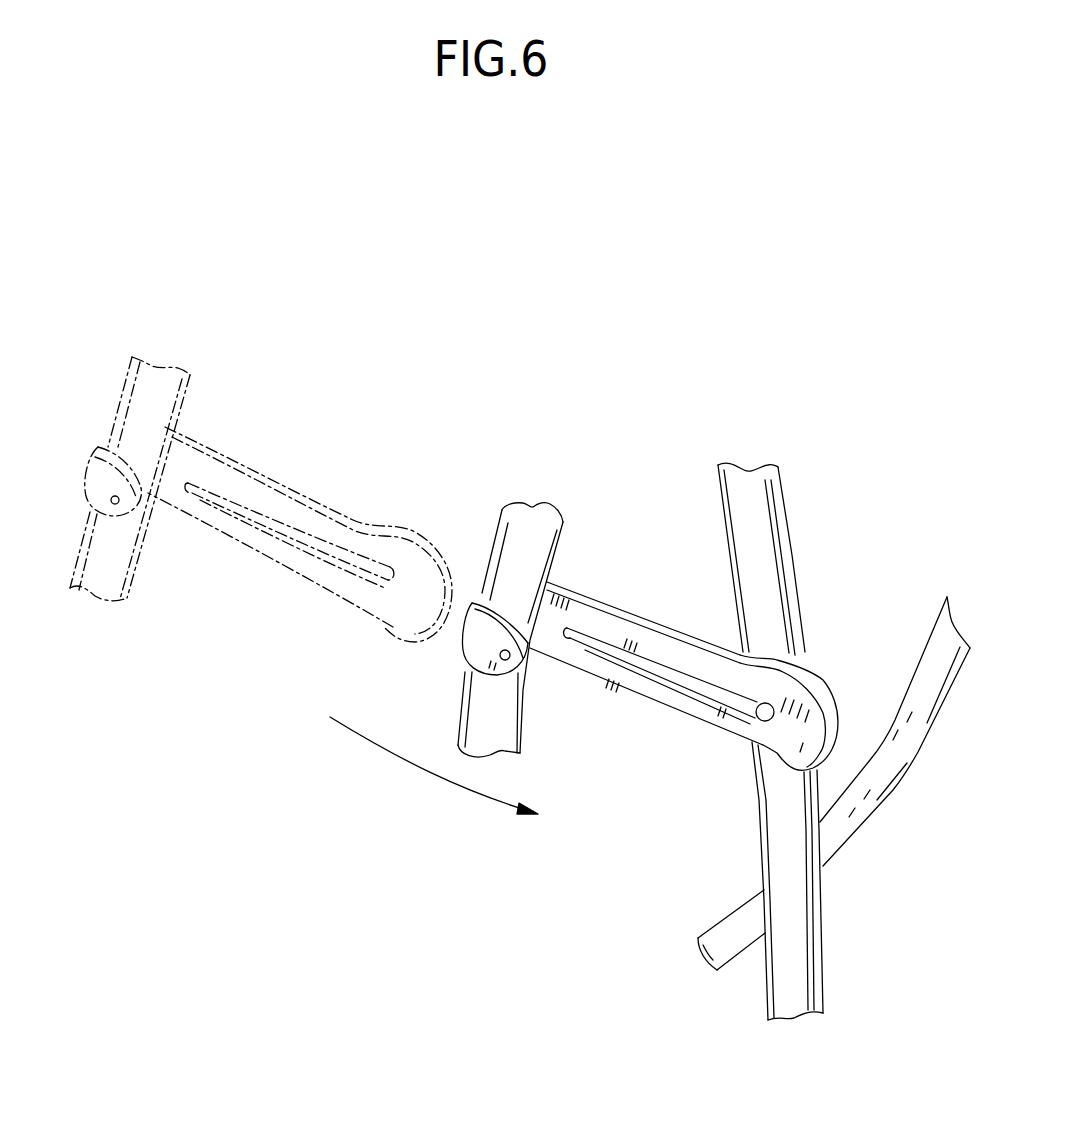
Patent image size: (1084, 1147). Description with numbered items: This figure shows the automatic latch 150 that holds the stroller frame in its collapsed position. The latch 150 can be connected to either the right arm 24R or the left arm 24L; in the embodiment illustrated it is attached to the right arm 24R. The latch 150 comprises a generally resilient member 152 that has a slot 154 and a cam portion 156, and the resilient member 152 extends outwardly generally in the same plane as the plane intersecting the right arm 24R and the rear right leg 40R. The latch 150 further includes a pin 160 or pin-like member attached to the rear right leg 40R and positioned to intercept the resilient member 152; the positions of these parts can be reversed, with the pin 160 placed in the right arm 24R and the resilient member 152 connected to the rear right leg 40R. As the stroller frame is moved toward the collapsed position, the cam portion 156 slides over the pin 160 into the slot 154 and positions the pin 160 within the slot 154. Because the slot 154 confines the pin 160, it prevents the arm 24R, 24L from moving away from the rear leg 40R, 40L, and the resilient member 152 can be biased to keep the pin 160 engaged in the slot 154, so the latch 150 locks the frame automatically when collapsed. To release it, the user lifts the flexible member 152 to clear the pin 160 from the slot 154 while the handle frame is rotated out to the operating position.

The right arm 24R is at (316, 557).
The left arm 24L is at (508, 552).
The rear right leg 40R is at (834, 741).
The rear left leg 40L is at (767, 565).
The latch 150 is at (295, 478).
The resilient member 152 is at (626, 681).
The slot 154 is at (678, 677).
The cam portion 156 is at (817, 695).
The pin 160 is at (756, 716).